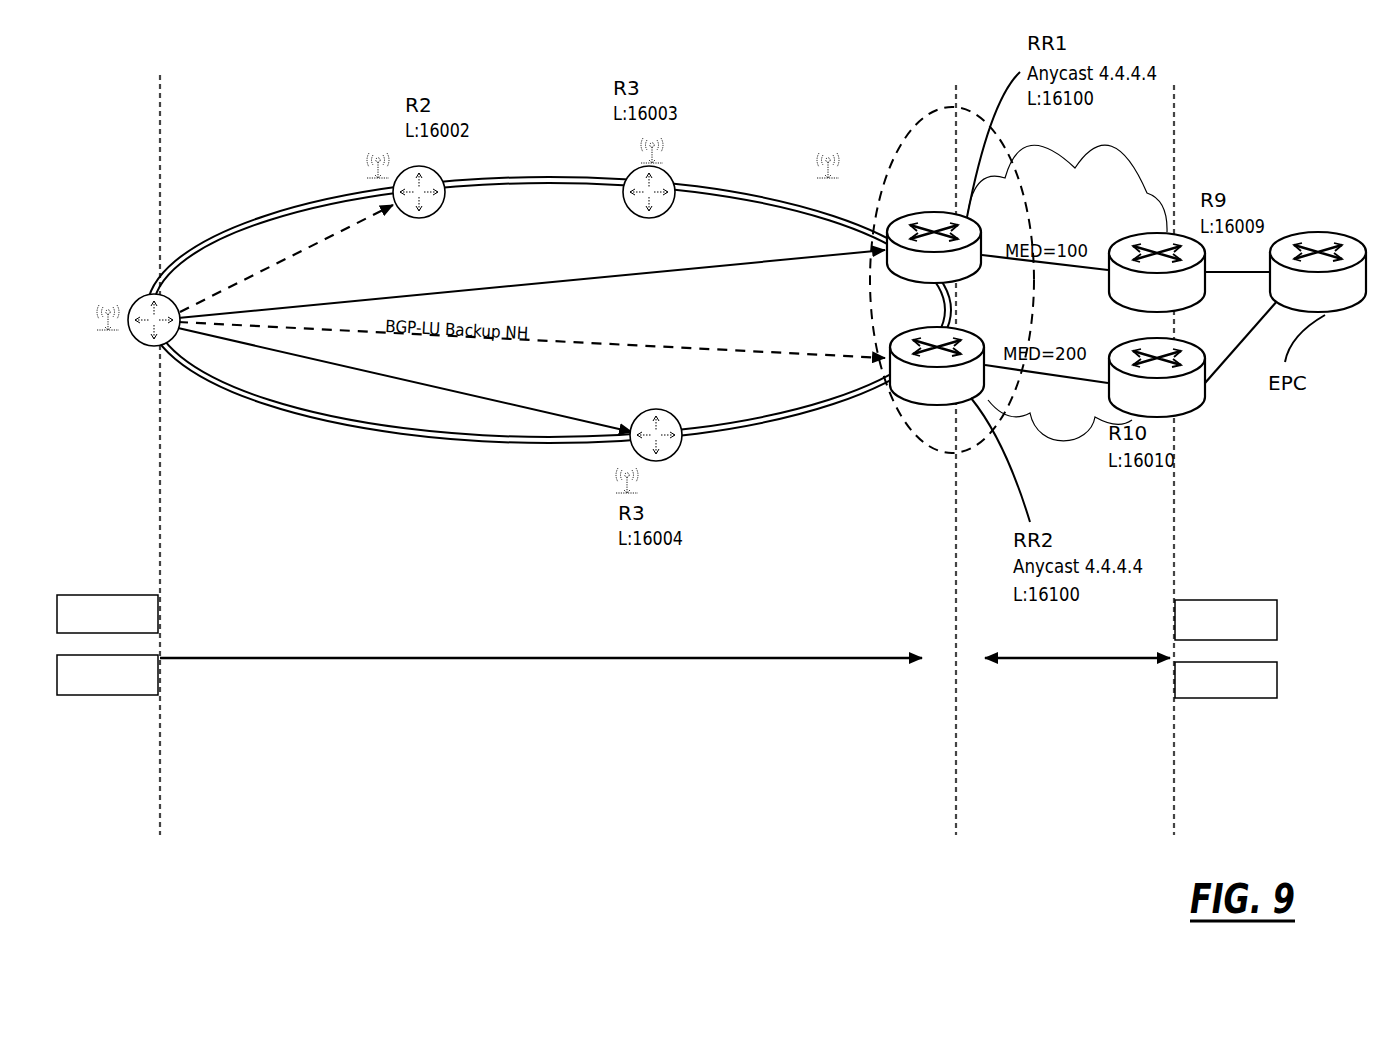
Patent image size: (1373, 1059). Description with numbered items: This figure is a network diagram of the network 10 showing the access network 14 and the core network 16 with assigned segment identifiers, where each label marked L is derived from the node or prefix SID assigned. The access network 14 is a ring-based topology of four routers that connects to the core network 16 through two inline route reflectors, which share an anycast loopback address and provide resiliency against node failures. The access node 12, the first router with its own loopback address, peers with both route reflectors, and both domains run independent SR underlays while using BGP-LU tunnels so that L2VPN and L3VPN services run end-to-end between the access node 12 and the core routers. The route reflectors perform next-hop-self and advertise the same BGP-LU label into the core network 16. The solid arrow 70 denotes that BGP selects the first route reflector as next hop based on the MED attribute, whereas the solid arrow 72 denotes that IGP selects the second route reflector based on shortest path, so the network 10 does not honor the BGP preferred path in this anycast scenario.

The network 10 is at (840, 58).
The node 12 is at (153, 293).
The access network 14 is at (525, 82).
The core network 16 is at (1150, 138).
The solid arrow 70 is at (508, 280).
The solid arrow 72 is at (596, 428).